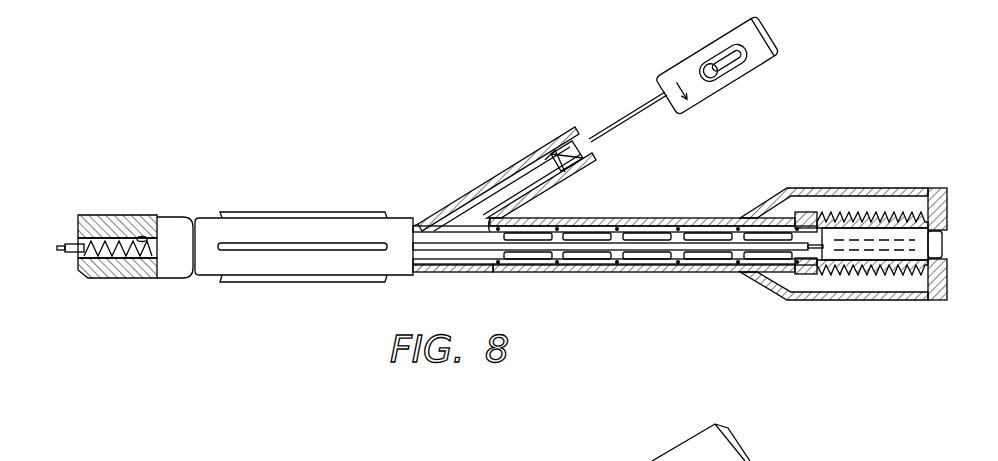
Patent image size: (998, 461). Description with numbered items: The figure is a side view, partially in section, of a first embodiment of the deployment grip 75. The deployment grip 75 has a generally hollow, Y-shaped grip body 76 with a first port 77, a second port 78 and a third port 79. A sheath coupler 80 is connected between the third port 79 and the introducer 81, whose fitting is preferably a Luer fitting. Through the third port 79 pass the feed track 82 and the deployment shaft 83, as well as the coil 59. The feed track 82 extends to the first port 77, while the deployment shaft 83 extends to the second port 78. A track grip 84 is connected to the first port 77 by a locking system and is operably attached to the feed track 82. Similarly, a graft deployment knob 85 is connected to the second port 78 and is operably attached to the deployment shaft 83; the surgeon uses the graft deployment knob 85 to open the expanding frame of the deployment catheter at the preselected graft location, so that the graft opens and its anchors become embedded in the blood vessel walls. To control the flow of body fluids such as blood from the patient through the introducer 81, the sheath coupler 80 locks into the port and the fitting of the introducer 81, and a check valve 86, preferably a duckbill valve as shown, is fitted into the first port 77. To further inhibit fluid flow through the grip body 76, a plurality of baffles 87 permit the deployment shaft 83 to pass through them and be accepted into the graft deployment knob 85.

The deployment grip 75 is at (376, 161).
The coil 59 is at (104, 237).
The grip body 76 is at (470, 258).
The first port 77 is at (511, 167).
The second port 78 is at (538, 253).
The third port 79 is at (423, 257).
The sheath coupler 80 is at (283, 232).
The introducer 81 is at (122, 273).
The feed track 82 is at (143, 236).
The deployment shaft 83 is at (74, 243).
The track grip 84 is at (688, 58).
The graft deployment knob 85 is at (767, 202).
The check valve 86 is at (543, 158).
The baffles 87 is at (632, 268).